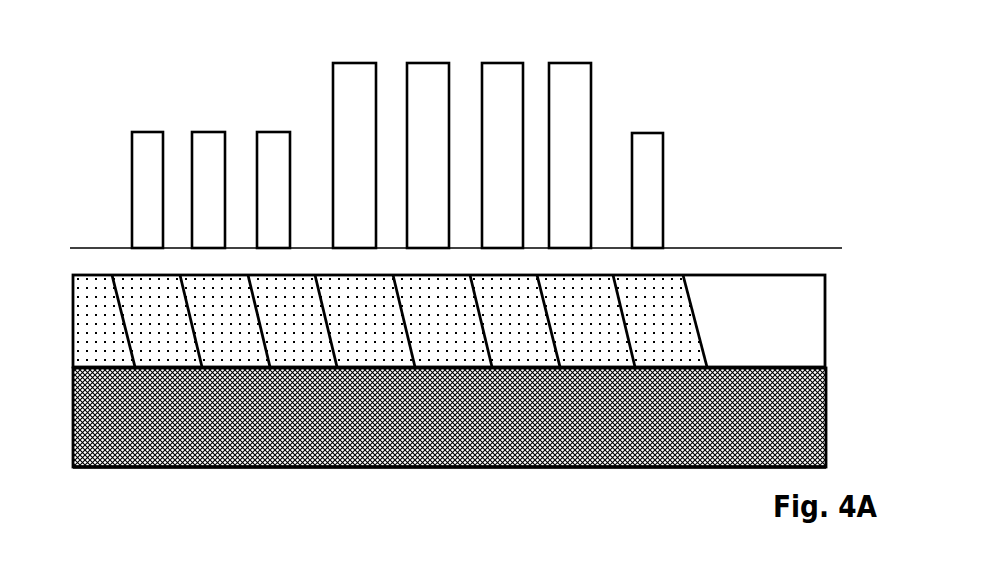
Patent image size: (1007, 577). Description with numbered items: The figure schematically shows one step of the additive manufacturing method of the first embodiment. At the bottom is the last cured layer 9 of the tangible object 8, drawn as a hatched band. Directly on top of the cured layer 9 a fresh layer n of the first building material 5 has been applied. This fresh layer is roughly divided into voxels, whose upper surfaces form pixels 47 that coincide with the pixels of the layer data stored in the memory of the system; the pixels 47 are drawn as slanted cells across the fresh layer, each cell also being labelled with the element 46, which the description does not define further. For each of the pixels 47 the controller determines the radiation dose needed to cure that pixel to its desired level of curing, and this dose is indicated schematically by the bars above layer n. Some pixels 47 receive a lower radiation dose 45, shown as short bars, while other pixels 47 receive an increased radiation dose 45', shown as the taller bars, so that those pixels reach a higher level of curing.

The radiation dose 45 is at (416, 164).
The increased radiation dose 45' is at (485, 131).
The exposed region 46 is at (85, 316).
The pixel 47 is at (88, 274).
The first building material 5 is at (825, 307).
The last cured layer 9 is at (826, 410).
The tangible object 8 is at (826, 445).